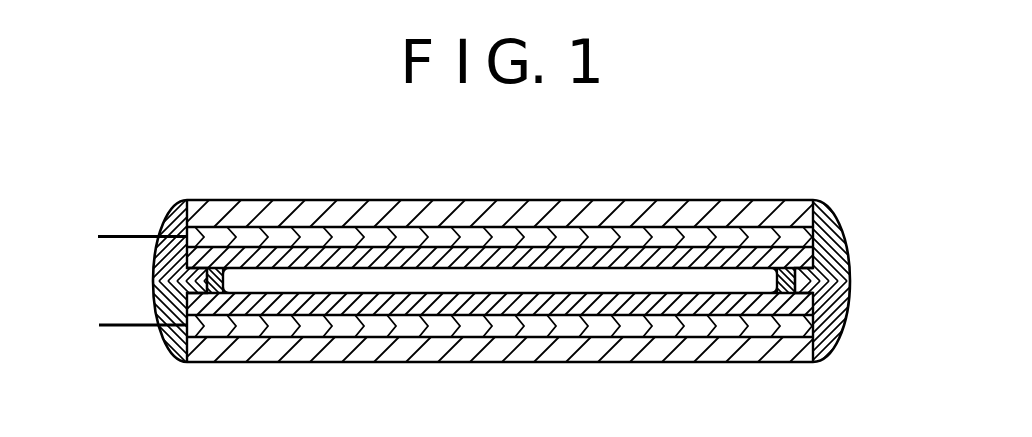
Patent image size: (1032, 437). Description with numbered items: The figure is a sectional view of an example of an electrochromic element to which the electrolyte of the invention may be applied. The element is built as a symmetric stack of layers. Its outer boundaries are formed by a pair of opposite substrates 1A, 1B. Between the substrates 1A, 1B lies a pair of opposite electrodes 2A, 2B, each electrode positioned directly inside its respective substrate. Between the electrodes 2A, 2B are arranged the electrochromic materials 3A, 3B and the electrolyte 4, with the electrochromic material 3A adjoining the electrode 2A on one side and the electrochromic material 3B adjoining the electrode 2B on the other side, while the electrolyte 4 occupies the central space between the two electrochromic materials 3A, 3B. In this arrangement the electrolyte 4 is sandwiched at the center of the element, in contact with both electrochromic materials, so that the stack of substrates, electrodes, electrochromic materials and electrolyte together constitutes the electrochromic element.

The substrate 1A is at (771, 207).
The electrode 2A is at (800, 240).
The electrochromic material 3A is at (801, 259).
The electrolyte 4 is at (443, 278).
The electrochromic material 3B is at (806, 304).
The electrode 2B is at (803, 325).
The substrate 1B is at (793, 352).